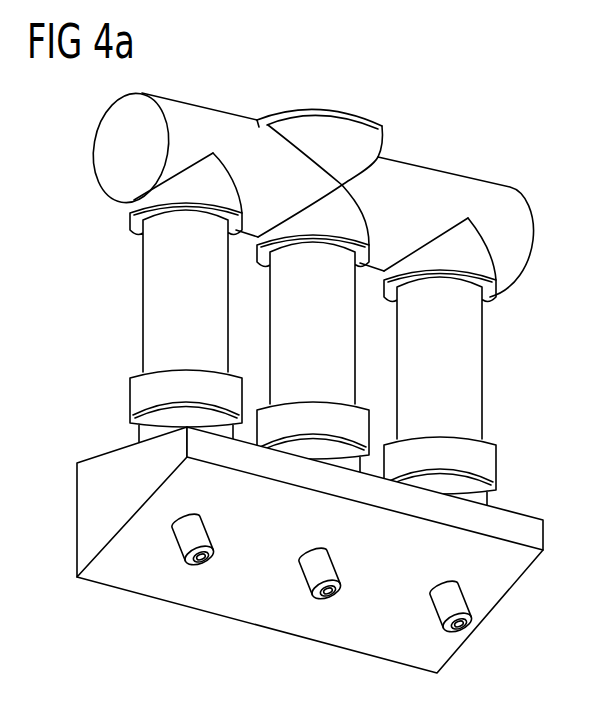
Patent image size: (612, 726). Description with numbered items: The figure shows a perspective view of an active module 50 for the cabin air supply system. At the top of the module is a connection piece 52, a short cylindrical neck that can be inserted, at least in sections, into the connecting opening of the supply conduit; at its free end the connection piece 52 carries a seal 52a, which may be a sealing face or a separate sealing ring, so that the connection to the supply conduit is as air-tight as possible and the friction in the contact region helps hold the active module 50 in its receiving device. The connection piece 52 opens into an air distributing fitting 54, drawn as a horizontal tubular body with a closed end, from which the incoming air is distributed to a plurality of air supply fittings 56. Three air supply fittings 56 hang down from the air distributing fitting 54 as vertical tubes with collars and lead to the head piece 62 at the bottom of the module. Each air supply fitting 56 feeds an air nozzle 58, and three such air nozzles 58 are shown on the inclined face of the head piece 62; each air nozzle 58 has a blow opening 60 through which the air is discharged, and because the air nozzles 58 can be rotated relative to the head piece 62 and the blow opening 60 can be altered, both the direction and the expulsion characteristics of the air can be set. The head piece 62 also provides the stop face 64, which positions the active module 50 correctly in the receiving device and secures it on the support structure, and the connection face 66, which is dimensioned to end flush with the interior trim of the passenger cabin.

The active module 50 is at (291, 175).
The connection piece 52 is at (346, 128).
The seal 52a is at (318, 112).
The air distributing fitting 54 is at (116, 150).
The air supply fitting 56 is at (155, 295).
The air nozzle 58 is at (195, 533).
The blow opening 60 is at (203, 560).
The head piece 62 is at (90, 507).
The stop face 64 is at (518, 514).
The connection face 66 is at (130, 578).